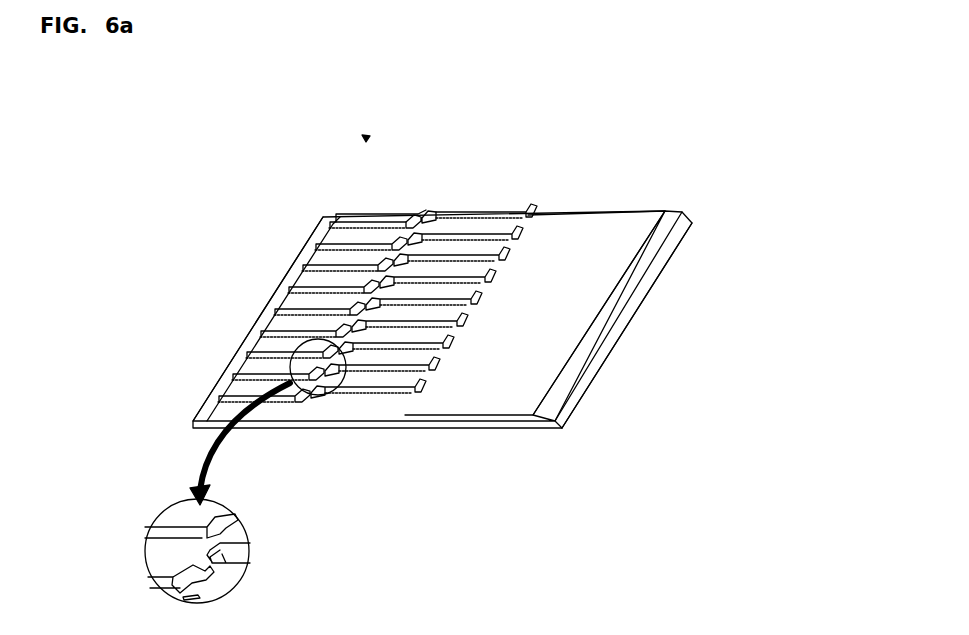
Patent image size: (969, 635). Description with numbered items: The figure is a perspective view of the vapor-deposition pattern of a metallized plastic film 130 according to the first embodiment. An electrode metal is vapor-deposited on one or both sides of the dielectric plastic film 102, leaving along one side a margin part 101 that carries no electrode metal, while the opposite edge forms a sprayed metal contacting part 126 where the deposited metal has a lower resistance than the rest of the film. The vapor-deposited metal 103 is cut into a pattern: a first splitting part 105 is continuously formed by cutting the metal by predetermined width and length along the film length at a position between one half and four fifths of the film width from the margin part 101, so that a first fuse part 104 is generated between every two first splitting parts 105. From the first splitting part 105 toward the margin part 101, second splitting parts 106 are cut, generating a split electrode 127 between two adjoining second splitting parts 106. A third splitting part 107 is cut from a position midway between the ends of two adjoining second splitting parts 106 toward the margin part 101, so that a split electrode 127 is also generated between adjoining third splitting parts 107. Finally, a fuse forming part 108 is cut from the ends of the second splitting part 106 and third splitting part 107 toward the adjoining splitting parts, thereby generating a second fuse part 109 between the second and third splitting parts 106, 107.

The metallized plastic film 130 is at (366, 140).
The margin part 101 is at (265, 303).
The plastic film 102 is at (635, 312).
The sprayed metal contacting part 126 is at (668, 237).
The vapor-deposited metal 103 is at (512, 217).
The third splitting part 107 is at (358, 220).
The split electrode 127 is at (440, 243).
The second splitting part 106 is at (475, 227).
The second fuse part 109 is at (413, 223).
The fuse forming part 108 is at (307, 403).
The first fuse part 104 is at (437, 360).
The first splitting part 105 is at (413, 397).